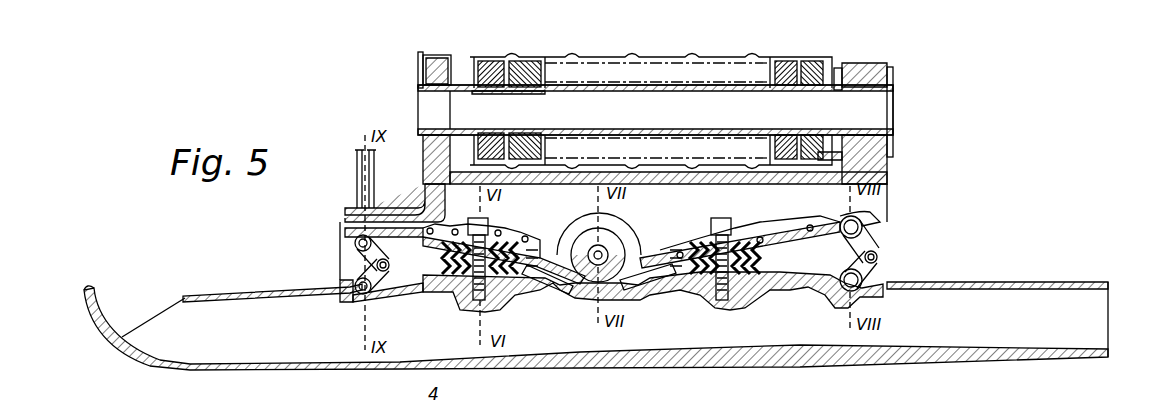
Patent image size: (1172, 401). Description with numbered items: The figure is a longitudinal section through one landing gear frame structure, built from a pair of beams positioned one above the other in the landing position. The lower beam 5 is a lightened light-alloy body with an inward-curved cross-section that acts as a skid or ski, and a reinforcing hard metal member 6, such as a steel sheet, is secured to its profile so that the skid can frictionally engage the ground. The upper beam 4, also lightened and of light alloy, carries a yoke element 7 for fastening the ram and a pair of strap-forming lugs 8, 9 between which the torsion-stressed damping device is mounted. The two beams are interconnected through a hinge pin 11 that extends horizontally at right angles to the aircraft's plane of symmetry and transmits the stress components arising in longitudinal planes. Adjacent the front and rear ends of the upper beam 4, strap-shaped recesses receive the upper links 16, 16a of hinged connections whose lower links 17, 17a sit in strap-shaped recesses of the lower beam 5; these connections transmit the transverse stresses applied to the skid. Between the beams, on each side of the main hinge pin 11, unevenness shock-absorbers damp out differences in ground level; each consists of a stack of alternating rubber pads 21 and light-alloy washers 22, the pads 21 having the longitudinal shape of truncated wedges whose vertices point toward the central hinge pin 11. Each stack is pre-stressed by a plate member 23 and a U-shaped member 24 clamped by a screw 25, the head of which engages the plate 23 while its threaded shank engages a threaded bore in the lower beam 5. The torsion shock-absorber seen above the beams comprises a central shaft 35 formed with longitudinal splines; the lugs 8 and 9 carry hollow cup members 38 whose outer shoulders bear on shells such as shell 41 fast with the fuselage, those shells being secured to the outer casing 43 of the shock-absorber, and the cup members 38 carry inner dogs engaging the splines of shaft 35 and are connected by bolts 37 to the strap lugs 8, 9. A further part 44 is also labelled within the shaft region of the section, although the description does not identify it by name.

The upper beam 4 is at (398, 212).
The lower beam 5 is at (402, 364).
The reinforcing hard metal member 6 is at (97, 322).
The yoke element 7 is at (358, 152).
The strap-forming lug 8 is at (433, 74).
The strap-forming lug 9 is at (882, 70).
The hinge pin 11 is at (597, 263).
The upper link 16 is at (373, 249).
The lower link 17 is at (372, 284).
The upper link 16a is at (880, 240).
The lower link 17a is at (868, 270).
The rubber discs or pads 21 is at (440, 266).
The light-alloy washers 22 is at (543, 288).
The plate member 23 is at (510, 232).
The U-shaped member 24 is at (458, 292).
The screw 25 is at (730, 235).
The central shaft 35 is at (500, 131).
The bolts 37 is at (895, 80).
The hollow cup members 38 is at (418, 70).
The shell 41 is at (828, 162).
The outer casing 43 is at (500, 63).
The sleeve 44 is at (490, 90).